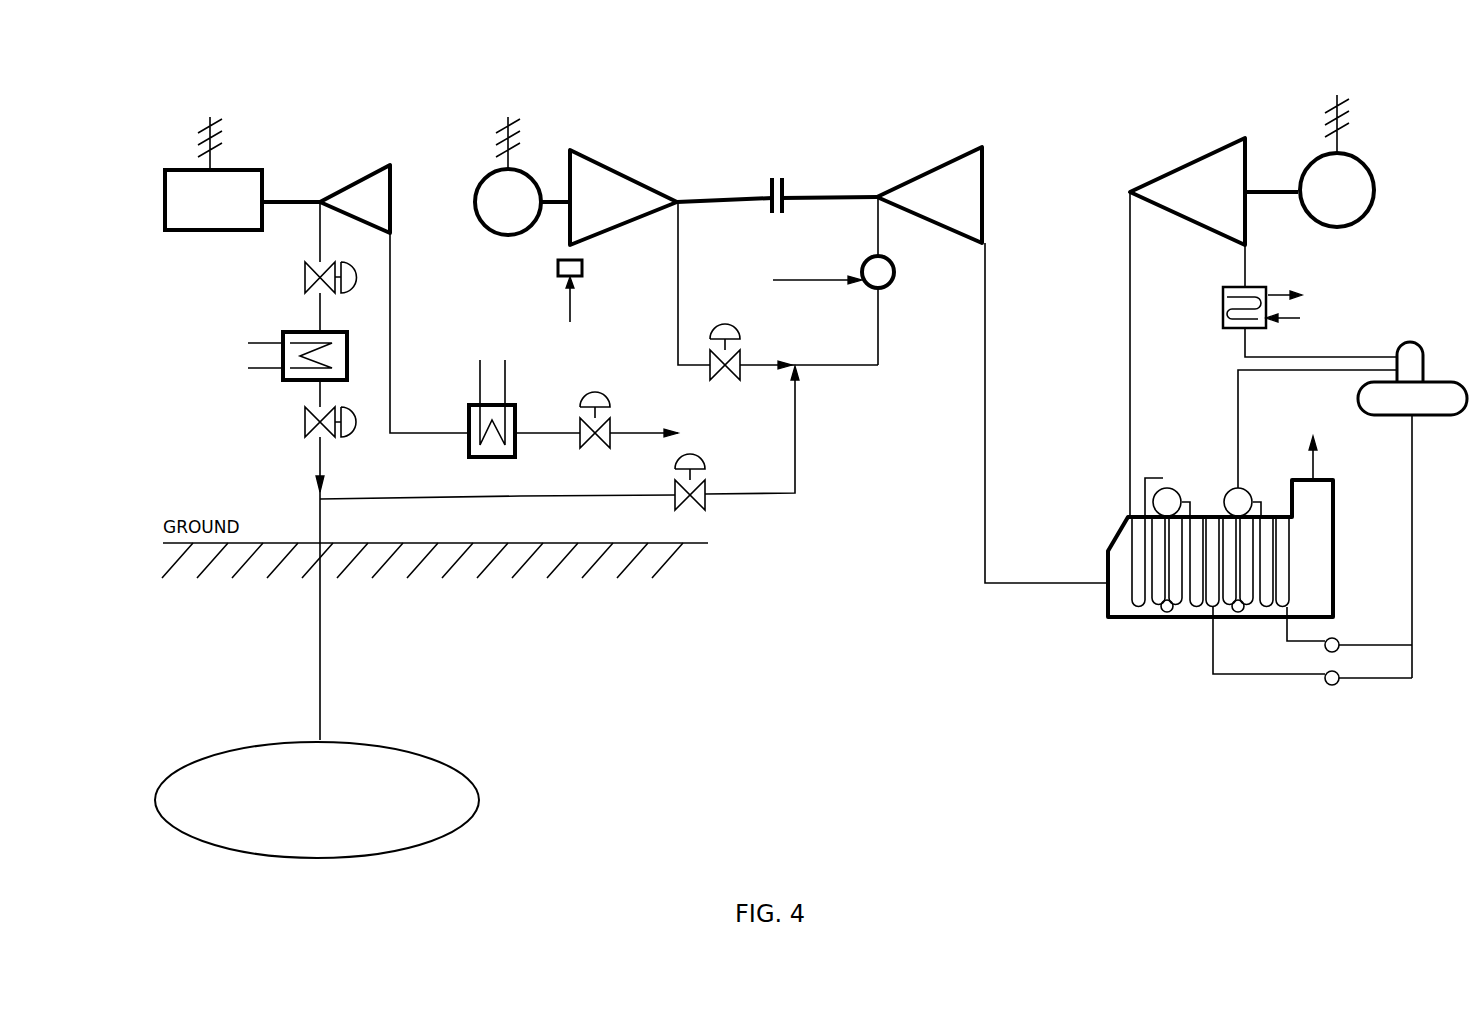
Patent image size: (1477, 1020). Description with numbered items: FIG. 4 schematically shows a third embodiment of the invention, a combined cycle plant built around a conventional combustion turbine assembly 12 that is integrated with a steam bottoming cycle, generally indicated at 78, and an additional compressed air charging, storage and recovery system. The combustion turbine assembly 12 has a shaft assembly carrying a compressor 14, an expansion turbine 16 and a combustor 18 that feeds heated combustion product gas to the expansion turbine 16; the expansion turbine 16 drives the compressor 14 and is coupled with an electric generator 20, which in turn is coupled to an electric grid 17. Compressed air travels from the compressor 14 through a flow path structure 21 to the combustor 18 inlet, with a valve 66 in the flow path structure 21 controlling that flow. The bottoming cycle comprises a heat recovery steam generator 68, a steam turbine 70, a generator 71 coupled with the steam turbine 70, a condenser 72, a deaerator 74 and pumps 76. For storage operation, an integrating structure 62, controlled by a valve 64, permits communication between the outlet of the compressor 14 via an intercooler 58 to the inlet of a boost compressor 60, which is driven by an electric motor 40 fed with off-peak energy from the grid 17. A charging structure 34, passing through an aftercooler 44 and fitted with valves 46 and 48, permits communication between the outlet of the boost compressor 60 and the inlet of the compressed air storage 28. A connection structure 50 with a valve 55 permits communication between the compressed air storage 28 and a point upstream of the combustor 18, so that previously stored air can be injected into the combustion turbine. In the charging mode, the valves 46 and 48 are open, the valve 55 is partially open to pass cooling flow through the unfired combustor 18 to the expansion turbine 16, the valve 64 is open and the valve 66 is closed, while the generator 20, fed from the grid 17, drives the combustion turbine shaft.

The combustion turbine assembly 12 is at (776, 150).
The compressor 14 is at (610, 190).
The expansion turbine 16 is at (925, 189).
The electric grid 17 is at (228, 130).
The combustor 18 is at (860, 297).
The electric generator 20 is at (474, 196).
The flow path structure 21 is at (825, 367).
The compressed air storage 28 is at (452, 790).
The charging structure 34 is at (322, 446).
The electric motor 40 is at (210, 245).
The aftercooler 44 is at (282, 349).
The valve 46 is at (305, 276).
The valve 48 is at (292, 418).
The connection structure 50 is at (516, 495).
The valve 55 is at (700, 460).
The intercooler 58 is at (470, 417).
The boost compressor 60 is at (393, 163).
The integrating structure 62 is at (392, 278).
The valve 64 is at (606, 398).
The valve 66 is at (721, 326).
The heat recovery steam generator 68 is at (1115, 568).
The steam turbine 70 is at (1163, 194).
The generator 71 is at (1388, 183).
The condenser 72 is at (1300, 305).
The deaerator 74 is at (1425, 358).
The pumps 76 is at (1329, 697).
The steam bottoming cycle 78 is at (1414, 550).